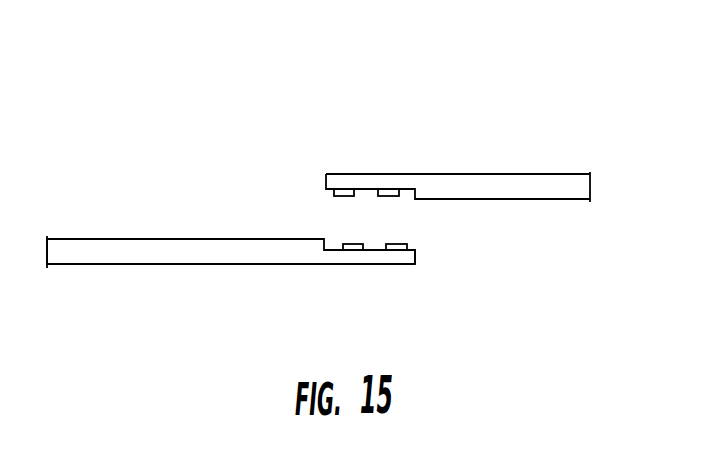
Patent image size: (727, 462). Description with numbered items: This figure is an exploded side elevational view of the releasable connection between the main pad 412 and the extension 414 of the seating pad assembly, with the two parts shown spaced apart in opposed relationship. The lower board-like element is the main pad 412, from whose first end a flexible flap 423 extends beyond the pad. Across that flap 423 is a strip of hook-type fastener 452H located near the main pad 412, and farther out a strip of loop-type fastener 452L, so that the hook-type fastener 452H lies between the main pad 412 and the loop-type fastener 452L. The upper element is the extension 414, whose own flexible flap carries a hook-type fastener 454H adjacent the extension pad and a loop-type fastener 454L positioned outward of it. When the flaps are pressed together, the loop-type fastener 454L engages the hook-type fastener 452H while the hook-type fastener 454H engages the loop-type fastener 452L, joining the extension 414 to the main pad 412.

The main pad 412 is at (135, 265).
The extension 414 is at (514, 173).
The flexible flap 423 is at (418, 258).
The hook-type fastener 452H is at (351, 250).
The loop-type fastener 452L is at (393, 251).
The hook-type fastener 454H is at (385, 196).
The loop-type fastener 454L is at (343, 196).